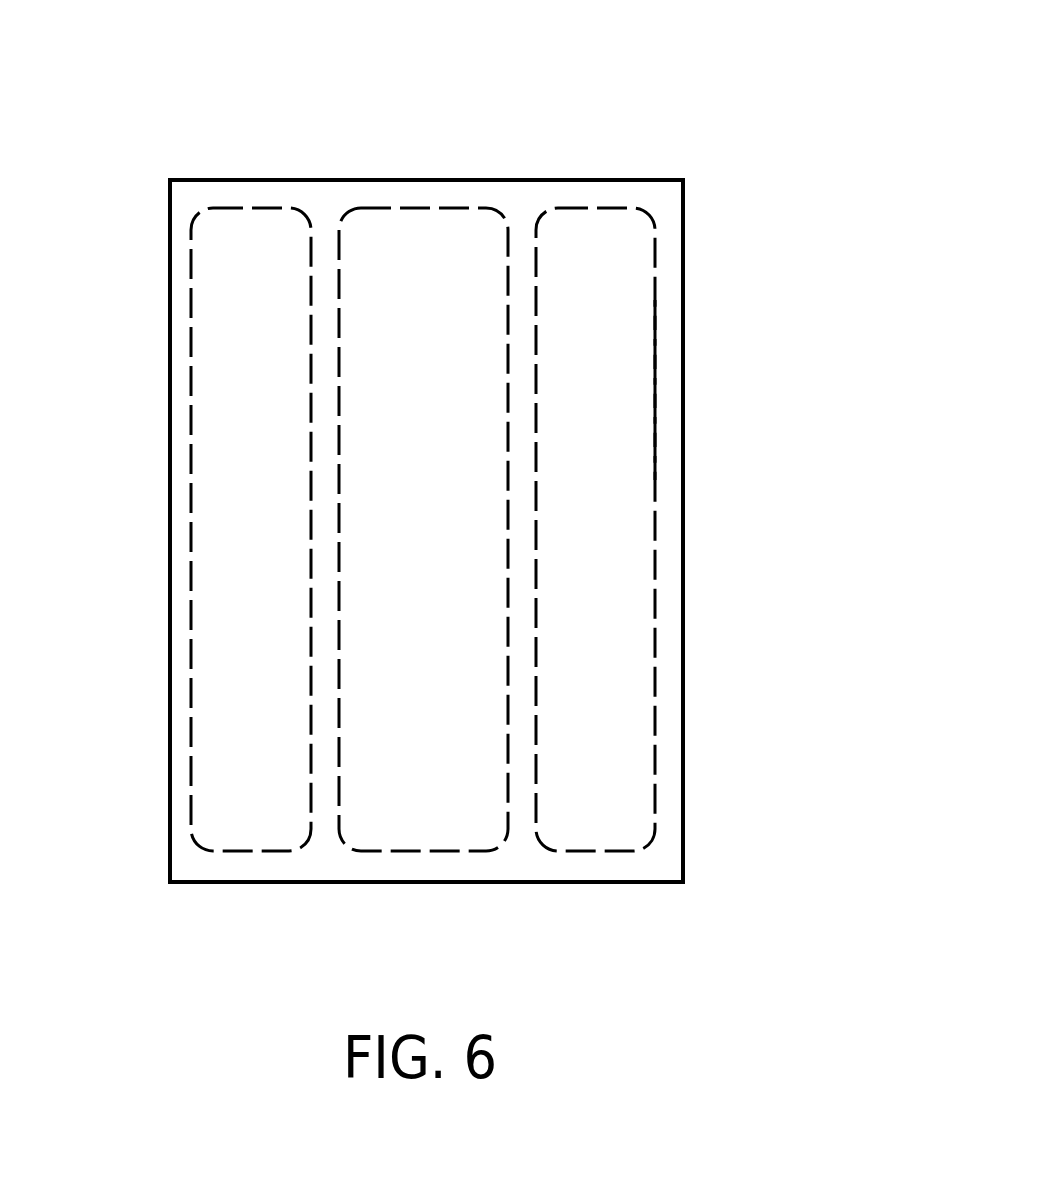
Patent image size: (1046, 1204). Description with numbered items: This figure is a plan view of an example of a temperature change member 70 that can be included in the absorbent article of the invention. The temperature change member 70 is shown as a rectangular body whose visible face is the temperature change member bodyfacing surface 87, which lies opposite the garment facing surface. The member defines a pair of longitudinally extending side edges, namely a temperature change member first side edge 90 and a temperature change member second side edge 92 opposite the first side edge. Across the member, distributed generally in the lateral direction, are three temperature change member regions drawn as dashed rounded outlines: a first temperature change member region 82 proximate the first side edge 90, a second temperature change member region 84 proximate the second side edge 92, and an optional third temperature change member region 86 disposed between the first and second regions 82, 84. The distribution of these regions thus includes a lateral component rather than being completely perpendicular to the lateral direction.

The temperature change member 70 is at (794, 116).
The first temperature change member region 82 is at (250, 246).
The second temperature change member region 84 is at (594, 255).
The third temperature change member region 86 is at (418, 255).
The temperature change member bodyfacing surface 87 is at (606, 398).
The temperature change member first side edge 90 is at (170, 488).
The temperature change member second side edge 92 is at (684, 486).